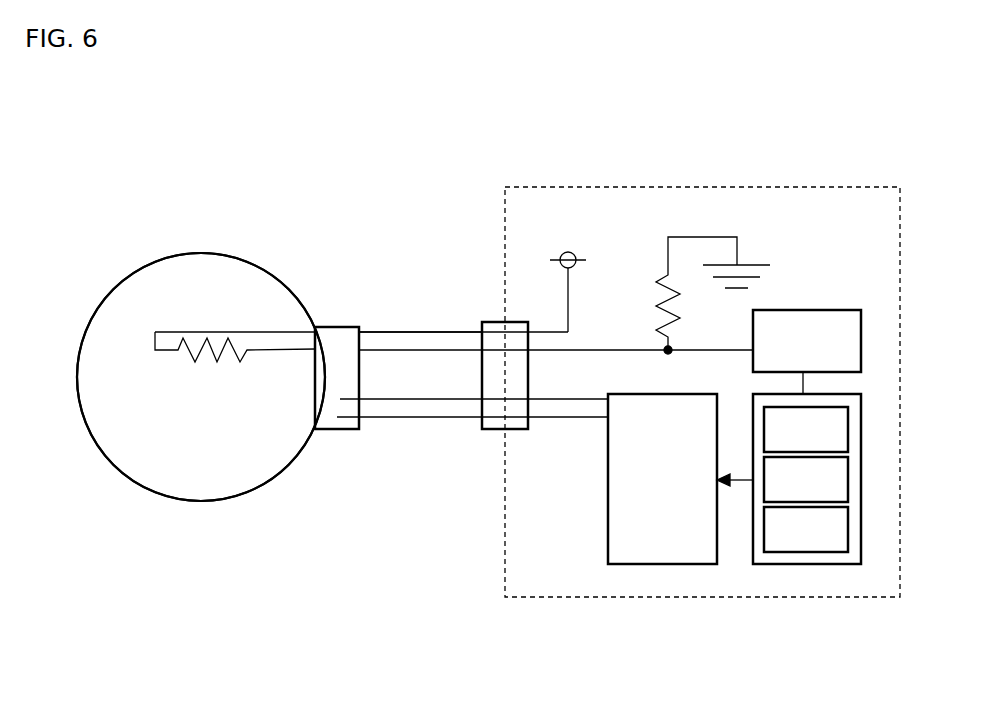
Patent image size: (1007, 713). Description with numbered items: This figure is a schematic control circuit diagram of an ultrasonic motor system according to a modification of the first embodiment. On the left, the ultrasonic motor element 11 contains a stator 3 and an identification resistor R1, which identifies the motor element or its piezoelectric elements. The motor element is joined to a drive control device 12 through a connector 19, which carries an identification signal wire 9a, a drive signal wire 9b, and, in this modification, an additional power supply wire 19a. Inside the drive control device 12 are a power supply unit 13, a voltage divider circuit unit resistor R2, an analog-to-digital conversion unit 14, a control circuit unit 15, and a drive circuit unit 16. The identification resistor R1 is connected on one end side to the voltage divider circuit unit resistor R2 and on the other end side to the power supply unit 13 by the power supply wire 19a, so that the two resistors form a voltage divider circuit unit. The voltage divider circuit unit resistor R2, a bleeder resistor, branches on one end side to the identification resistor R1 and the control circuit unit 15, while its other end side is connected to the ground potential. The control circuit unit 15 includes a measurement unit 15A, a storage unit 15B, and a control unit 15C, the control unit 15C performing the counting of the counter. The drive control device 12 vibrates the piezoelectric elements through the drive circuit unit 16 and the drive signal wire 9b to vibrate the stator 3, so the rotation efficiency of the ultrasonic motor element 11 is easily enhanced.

The stator 3 is at (271, 290).
The ultrasonic motor element 11 is at (148, 260).
The identification resistor R1 is at (224, 350).
The connector 19 is at (336, 330).
The identification signal wire 9a is at (382, 350).
The power supply wire 19a is at (427, 332).
The drive signal wire 9b is at (380, 400).
The power supply unit 13 is at (567, 252).
The voltage divider circuit unit resistor R2 is at (656, 290).
The drive control device 12 is at (829, 195).
The analog-to-digital conversion unit 14 is at (850, 312).
The control circuit unit 15 is at (841, 575).
The measurement unit 15A is at (845, 443).
The storage unit 15B is at (770, 497).
The control unit 15C is at (795, 545).
The drive circuit unit 16 is at (667, 552).